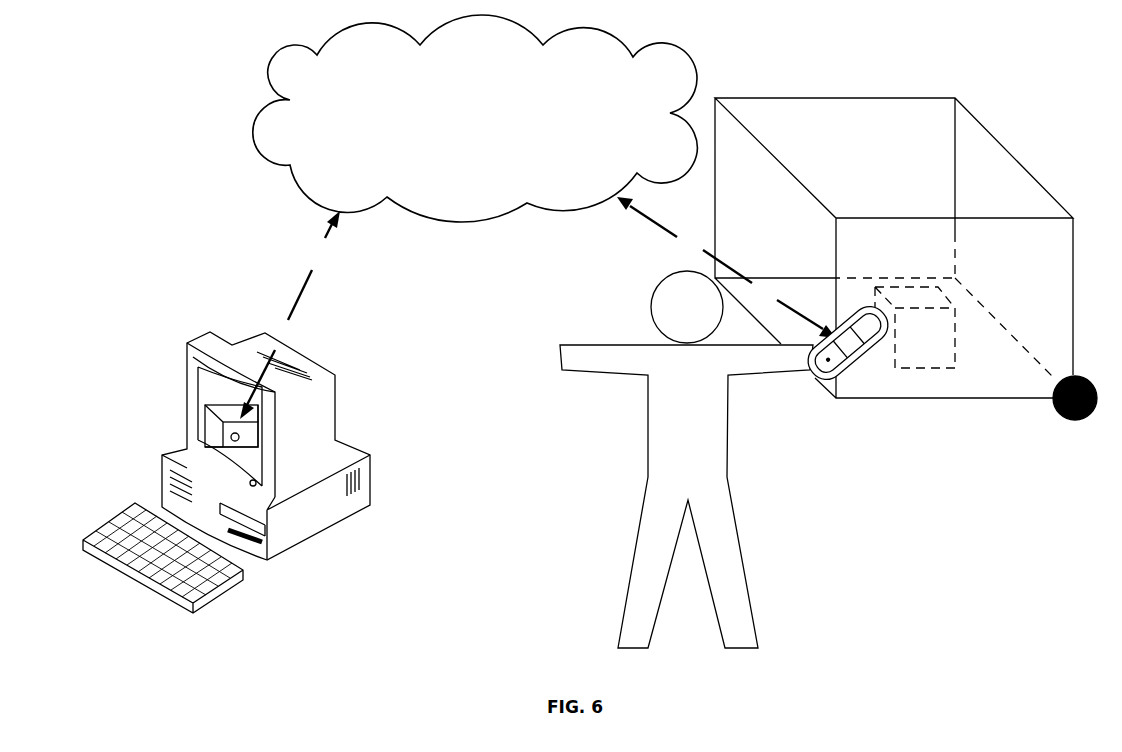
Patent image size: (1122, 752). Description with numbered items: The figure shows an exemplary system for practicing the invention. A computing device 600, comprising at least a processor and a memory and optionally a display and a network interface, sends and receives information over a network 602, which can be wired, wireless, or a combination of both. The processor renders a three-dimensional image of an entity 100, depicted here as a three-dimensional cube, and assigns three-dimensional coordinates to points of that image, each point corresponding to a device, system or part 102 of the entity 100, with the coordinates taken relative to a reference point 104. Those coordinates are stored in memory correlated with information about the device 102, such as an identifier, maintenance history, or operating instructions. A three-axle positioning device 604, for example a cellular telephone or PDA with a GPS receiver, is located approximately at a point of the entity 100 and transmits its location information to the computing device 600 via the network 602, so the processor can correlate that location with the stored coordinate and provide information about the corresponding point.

The entity 100 is at (853, 88).
The device, system or part 102 is at (908, 348).
The reference point 104 is at (1067, 493).
The computing device 600 is at (226, 488).
The network 602 is at (475, 118).
The three-axle positioning device 604 is at (853, 384).